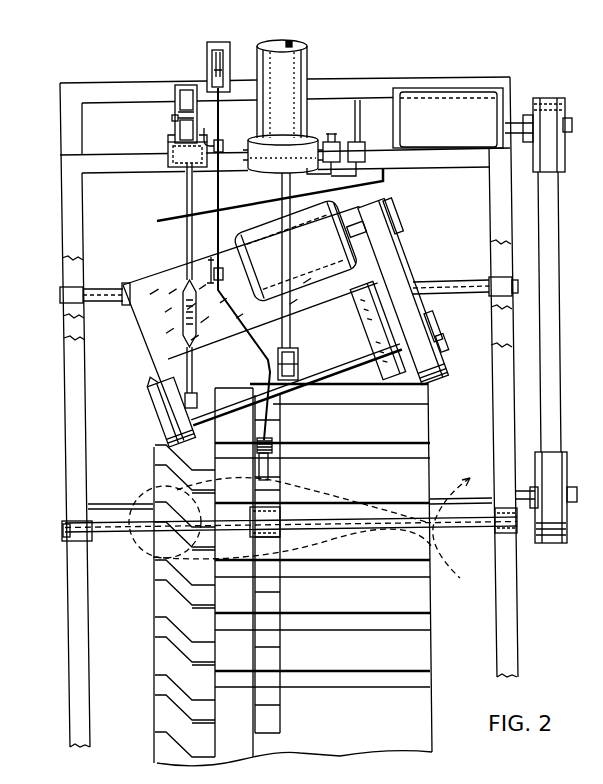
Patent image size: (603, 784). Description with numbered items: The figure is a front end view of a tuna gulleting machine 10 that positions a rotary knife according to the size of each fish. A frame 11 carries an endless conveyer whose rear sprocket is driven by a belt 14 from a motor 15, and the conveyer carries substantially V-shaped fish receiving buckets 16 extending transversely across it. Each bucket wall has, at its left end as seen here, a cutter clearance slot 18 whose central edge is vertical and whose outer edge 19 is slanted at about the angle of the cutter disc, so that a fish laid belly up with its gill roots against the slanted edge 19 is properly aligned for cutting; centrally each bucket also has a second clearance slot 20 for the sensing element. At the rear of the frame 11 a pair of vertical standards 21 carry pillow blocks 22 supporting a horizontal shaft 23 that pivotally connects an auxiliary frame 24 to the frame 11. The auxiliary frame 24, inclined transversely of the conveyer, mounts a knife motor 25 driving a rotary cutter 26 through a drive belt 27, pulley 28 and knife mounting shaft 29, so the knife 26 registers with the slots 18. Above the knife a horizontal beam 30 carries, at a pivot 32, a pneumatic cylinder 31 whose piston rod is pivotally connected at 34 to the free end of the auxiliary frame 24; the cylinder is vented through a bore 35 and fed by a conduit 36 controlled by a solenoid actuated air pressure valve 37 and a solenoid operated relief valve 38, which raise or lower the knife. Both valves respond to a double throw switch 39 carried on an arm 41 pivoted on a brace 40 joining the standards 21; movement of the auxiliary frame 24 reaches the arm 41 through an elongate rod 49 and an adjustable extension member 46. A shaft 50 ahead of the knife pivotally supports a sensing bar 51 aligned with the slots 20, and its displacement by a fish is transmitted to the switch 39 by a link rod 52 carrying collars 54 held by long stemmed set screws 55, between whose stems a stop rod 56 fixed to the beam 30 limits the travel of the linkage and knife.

The tuna gulleting machine 10 is at (58, 391).
The frame 11 is at (80, 195).
The belt 14 is at (554, 347).
The motor 15 is at (448, 118).
The fish receiving buckets 16 is at (290, 567).
The cutter clearance slot 18 is at (207, 753).
The outer edge of slot 19 is at (190, 738).
The second clearance slot 20 is at (262, 732).
The vertical standards 21 is at (75, 133).
The pillow block 22 is at (78, 281).
The horizontal shaft 23 is at (430, 286).
The auxiliary frame 24 is at (147, 325).
The knife motor 25 is at (305, 247).
The rotary cutter 26 is at (145, 398).
The drive belt 27 is at (397, 255).
The pulley 28 is at (433, 325).
The knife mounting shaft 29 is at (293, 400).
The horizontal beam 30 is at (129, 162).
The pneumatic cylinder 31 is at (308, 66).
The pivotal connection of cylinder 32 is at (315, 140).
The pivotal connection of rod 34 is at (293, 356).
The bore 35 is at (291, 44).
The conduit 36 is at (360, 111).
The solenoid actuated air pressure valve 37 is at (364, 141).
The solenoid operated relief valve 38 is at (337, 133).
The double throw switch 39 is at (207, 45).
The brace 40 is at (122, 90).
The arm 41 is at (177, 102).
The adjustable extension member 46 is at (177, 125).
The elongate rod 49 is at (187, 239).
The shaft 50 is at (113, 532).
The sensing bar 51 is at (268, 496).
The link rod 52 is at (220, 118).
The collars 54 is at (223, 146).
The long stemmed set screws 55 is at (210, 205).
The stop rod 56 is at (168, 220).